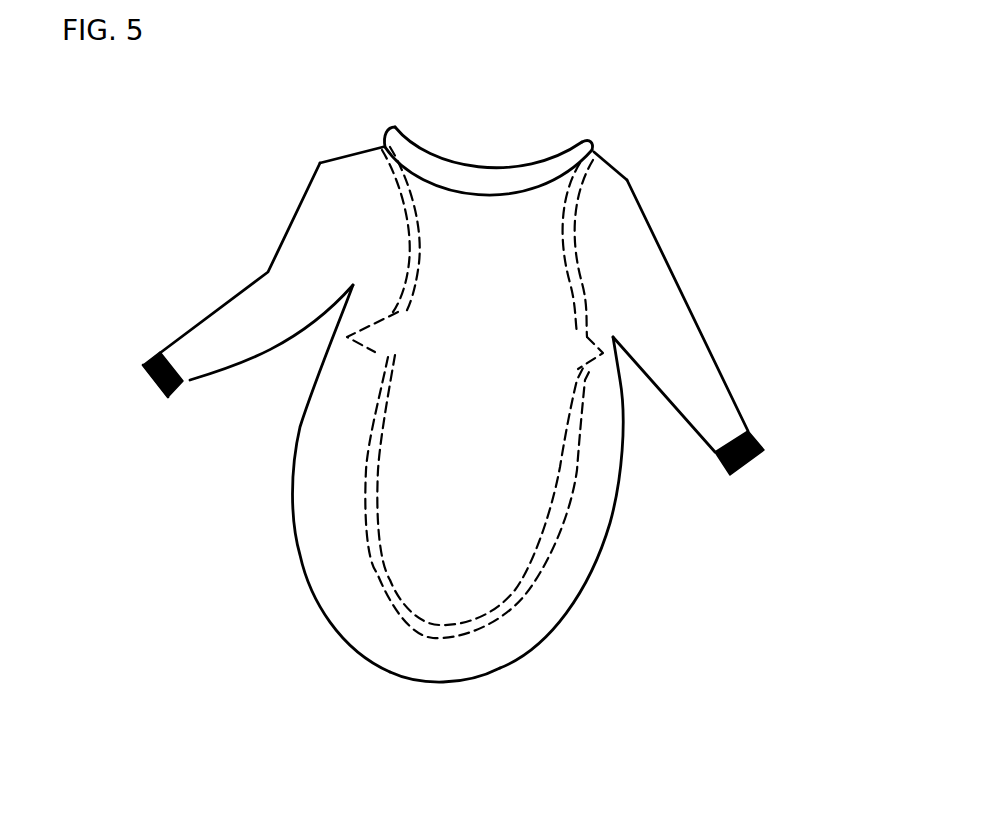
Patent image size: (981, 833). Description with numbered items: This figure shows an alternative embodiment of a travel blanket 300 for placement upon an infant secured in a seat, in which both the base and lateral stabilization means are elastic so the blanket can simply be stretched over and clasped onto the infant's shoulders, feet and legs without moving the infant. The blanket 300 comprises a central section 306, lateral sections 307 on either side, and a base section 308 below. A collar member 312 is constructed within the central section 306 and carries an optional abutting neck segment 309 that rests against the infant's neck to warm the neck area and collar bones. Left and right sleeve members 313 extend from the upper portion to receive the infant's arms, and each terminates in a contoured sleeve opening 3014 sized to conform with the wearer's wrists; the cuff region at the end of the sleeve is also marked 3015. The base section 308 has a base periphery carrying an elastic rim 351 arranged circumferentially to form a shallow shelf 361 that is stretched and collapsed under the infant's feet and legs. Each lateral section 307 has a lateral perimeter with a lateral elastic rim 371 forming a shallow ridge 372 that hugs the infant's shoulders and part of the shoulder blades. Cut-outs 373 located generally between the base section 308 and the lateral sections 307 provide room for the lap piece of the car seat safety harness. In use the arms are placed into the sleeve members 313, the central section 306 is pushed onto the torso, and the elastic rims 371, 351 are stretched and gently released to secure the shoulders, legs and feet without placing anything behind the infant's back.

The blanket 300 is at (176, 154).
The central section 306 is at (505, 427).
The lateral sections 307 is at (367, 197).
The base section 308 is at (427, 677).
The neck segment 309 is at (560, 160).
The collar member 312 is at (505, 202).
The sleeve members 313 is at (255, 338).
The elastic rim 351 is at (500, 612).
The shallow shelf 361 is at (363, 630).
The lateral elastic rim 371 is at (568, 253).
The shallow ridge 372 is at (613, 277).
The cut-outs 373 is at (375, 353).
The contoured sleeve openings 3014 is at (192, 386).
The cuff edge 3015 is at (142, 362).